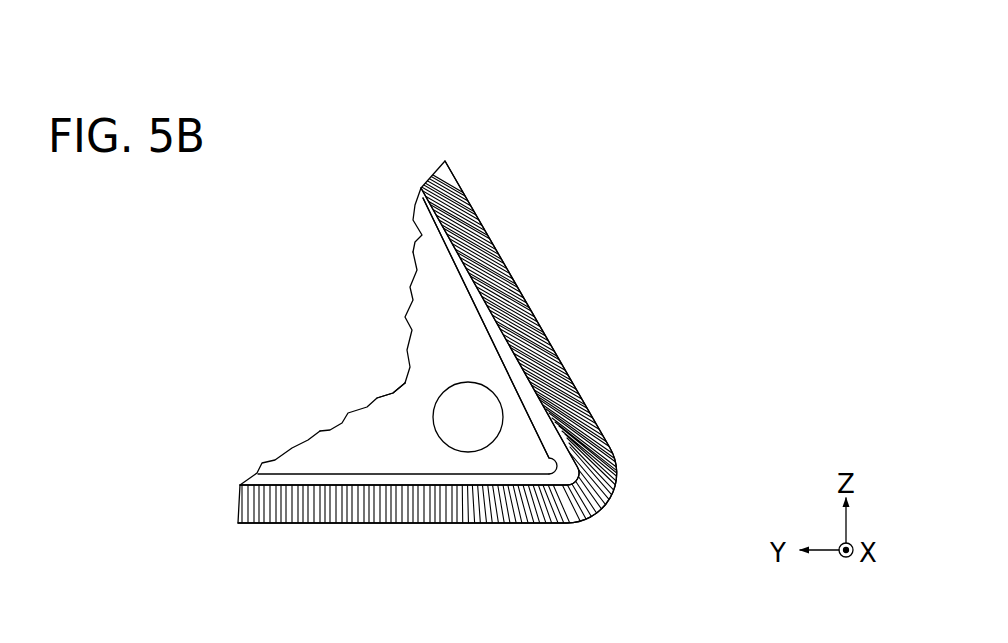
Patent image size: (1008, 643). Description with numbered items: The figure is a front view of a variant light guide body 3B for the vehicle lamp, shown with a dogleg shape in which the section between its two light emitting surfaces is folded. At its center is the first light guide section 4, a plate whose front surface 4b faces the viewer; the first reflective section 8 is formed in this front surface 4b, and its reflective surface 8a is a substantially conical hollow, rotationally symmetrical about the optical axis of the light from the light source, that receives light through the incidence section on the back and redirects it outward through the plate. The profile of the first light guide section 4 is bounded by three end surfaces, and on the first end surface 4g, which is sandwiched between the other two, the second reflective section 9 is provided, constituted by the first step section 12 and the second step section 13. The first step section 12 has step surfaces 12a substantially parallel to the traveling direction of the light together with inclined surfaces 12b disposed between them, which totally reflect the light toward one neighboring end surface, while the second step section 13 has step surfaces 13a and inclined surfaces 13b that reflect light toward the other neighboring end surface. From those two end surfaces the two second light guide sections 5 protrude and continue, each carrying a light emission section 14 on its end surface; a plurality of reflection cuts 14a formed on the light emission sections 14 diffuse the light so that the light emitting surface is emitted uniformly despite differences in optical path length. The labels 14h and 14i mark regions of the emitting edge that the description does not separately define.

The light guide body 3B is at (443, 378).
The first light guide section 4 is at (456, 399).
The front surface 4b is at (451, 302).
The first end surface 4g is at (394, 362).
The second light guide section 5 is at (546, 322).
The first reflective section 8 is at (575, 427).
The reflective surface 8a is at (482, 431).
The second reflective section 9 is at (292, 336).
The first step section 12 is at (325, 285).
The step surface 12a is at (413, 268).
The inclined surface 12b is at (413, 249).
The second step section 13 is at (283, 417).
The step surface 13a is at (313, 437).
The inclined surface 13b is at (330, 428).
The light emission section 14 is at (541, 326).
The reflection cut 14a is at (547, 364).
The land at corner side 14h is at (533, 398).
The land at bottom side 14i is at (517, 486).